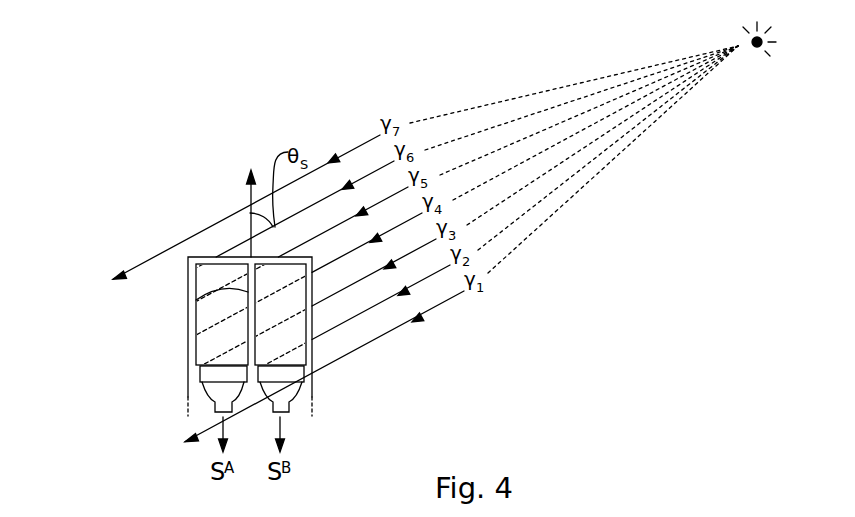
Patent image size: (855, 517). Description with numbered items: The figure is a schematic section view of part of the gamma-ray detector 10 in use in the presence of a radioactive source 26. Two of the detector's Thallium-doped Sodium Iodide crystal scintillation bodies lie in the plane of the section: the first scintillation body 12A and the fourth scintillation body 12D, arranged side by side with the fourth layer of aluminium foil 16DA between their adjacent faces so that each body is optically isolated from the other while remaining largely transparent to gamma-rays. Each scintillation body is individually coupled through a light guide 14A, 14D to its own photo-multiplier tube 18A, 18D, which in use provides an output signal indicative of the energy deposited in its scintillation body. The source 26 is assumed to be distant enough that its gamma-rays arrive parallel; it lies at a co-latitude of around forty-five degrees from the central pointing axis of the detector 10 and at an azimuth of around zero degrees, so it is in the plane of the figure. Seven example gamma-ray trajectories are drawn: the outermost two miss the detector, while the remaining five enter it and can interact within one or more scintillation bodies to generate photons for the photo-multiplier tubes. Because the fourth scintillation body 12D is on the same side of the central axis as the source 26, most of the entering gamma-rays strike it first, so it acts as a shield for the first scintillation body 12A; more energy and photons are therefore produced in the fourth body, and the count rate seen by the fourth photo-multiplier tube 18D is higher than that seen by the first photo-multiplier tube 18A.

The detector 10 is at (166, 217).
The first scintillation body 12A is at (188, 330).
The fourth scintillation body 12D is at (313, 350).
The light guide 14A is at (200, 369).
The light guide 14D is at (304, 373).
The fourth layer of aluminium foil 16DA is at (196, 300).
The first photo-multiplier tube 18A is at (208, 397).
The fourth photo-multiplier tube 18D is at (297, 397).
The radioactive source 26 is at (759, 58).